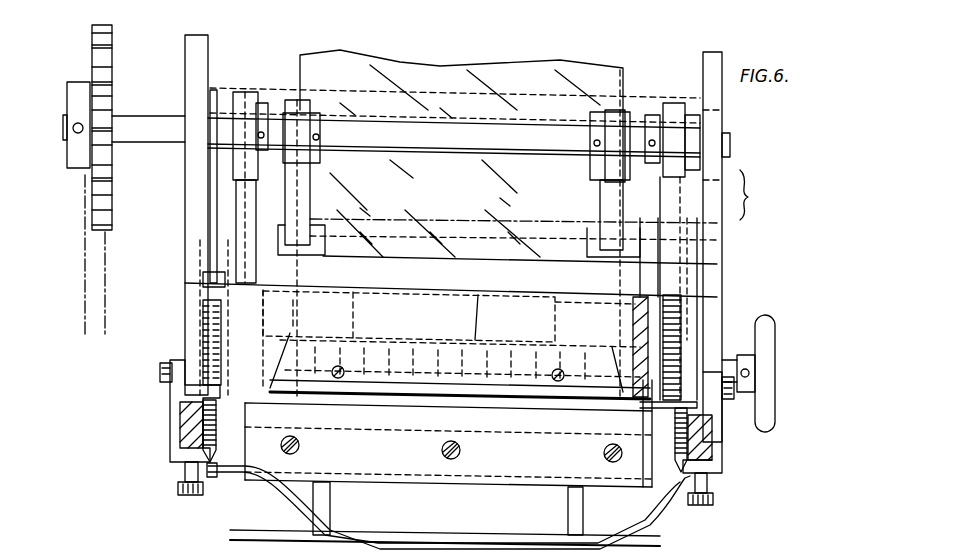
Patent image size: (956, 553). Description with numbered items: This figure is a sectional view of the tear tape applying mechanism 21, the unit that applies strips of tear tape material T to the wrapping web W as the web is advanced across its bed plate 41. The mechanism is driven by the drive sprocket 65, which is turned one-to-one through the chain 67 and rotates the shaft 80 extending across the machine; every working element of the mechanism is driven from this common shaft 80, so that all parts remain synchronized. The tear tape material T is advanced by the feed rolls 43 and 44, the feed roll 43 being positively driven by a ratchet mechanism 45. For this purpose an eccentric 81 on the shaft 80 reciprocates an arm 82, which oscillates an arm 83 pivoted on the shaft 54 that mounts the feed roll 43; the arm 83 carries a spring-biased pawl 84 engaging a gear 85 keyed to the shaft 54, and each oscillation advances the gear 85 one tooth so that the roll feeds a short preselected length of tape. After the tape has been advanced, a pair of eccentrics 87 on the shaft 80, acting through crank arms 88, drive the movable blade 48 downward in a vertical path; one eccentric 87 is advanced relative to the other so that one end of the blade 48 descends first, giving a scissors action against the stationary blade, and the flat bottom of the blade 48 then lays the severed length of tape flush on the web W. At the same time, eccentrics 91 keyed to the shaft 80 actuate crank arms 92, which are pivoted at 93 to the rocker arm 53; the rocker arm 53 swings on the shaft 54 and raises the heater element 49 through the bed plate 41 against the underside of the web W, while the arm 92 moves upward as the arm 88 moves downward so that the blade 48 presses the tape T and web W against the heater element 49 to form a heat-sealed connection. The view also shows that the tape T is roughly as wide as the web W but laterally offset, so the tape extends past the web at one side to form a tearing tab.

The tear tape applying mechanism 21 is at (759, 195).
The bed plate 41 is at (382, 406).
The feed roll 43 is at (291, 336).
The feed roll 44 is at (520, 294).
The ratchet mechanism 45 is at (200, 290).
The movable blade 48 is at (470, 396).
The heater element 49 is at (245, 400).
The rocker arm 53 is at (246, 452).
The shaft 54 is at (205, 345).
The drive sprocket 65 is at (112, 76).
The chain 67 is at (107, 272).
The shaft 80 is at (168, 116).
The eccentric 81 is at (200, 186).
The arm 82 is at (214, 213).
The arm 83 is at (222, 268).
The spring-biased pawl 84 is at (210, 305).
The gear 85 is at (200, 358).
The eccentric 87 is at (318, 120).
The crank arm 88 is at (305, 200).
The eccentric 91 is at (262, 108).
The crank arm 92 is at (245, 192).
The pivot 93 is at (216, 344).
The tear tape material T is at (462, 68).
The wrapping material web W is at (556, 404).